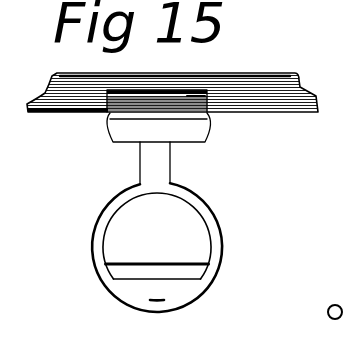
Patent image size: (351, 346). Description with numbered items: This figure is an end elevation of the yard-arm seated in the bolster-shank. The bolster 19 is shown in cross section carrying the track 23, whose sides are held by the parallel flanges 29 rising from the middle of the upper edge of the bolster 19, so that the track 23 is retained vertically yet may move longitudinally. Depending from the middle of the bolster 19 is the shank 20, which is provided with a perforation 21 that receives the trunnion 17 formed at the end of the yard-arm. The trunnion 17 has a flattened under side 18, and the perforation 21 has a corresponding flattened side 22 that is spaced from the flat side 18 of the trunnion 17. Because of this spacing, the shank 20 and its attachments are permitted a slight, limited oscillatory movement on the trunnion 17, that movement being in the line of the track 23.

The trunnion 17 is at (180, 228).
The flattened under side 18 is at (180, 267).
The bolster 19 is at (128, 125).
The depending shank 20 is at (157, 162).
The perforation 21 is at (112, 270).
The flattened side 22 is at (157, 280).
The track 23 is at (58, 113).
The recess 29 is at (188, 98).